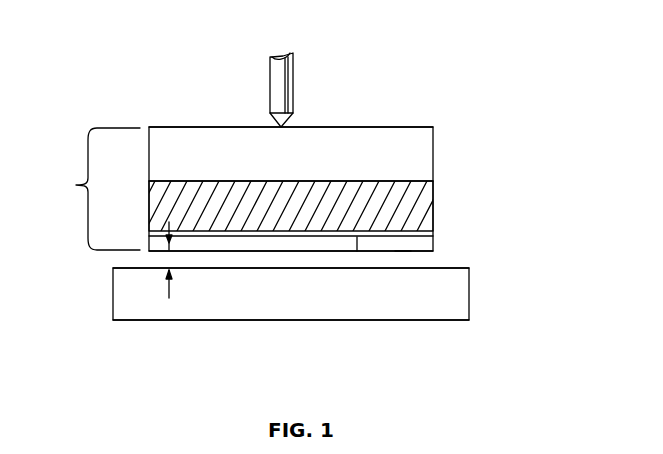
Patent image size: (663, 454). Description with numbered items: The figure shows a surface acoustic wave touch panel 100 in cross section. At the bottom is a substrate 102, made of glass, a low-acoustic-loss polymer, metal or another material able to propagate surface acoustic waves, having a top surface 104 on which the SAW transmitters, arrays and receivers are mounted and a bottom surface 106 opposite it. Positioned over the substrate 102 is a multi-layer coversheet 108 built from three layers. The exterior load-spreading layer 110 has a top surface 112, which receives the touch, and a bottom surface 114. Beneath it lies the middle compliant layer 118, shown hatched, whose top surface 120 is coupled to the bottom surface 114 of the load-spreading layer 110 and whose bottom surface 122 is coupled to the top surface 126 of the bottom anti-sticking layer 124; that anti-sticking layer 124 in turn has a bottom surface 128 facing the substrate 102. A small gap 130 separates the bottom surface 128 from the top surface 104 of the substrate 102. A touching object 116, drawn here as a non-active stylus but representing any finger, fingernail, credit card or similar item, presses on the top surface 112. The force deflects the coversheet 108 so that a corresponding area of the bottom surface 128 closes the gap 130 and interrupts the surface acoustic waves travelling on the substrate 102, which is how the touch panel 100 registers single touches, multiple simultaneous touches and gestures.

The SAW touch panel 100 is at (523, 60).
The substrate 102 is at (469, 300).
The top surface of substrate 104 is at (448, 268).
The bottom surface of substrate 106 is at (452, 320).
The multi-layer coversheet 108 is at (84, 189).
The load-spreading layer 110 is at (433, 137).
The top surface of load-spreading layer 112 is at (377, 127).
The bottom surface of load-spreading layer 114 is at (418, 181).
The object 116 is at (270, 90).
The compliant layer 118 is at (433, 214).
The top surface of compliant layer 120 is at (392, 192).
The bottom surface of compliant layer 122 is at (405, 232).
The anti-sticking layer 124 is at (435, 247).
The top surface of anti-sticking layer 126 is at (357, 251).
The bottom surface of anti-sticking layer 128 is at (403, 251).
The gap 130 is at (167, 287).